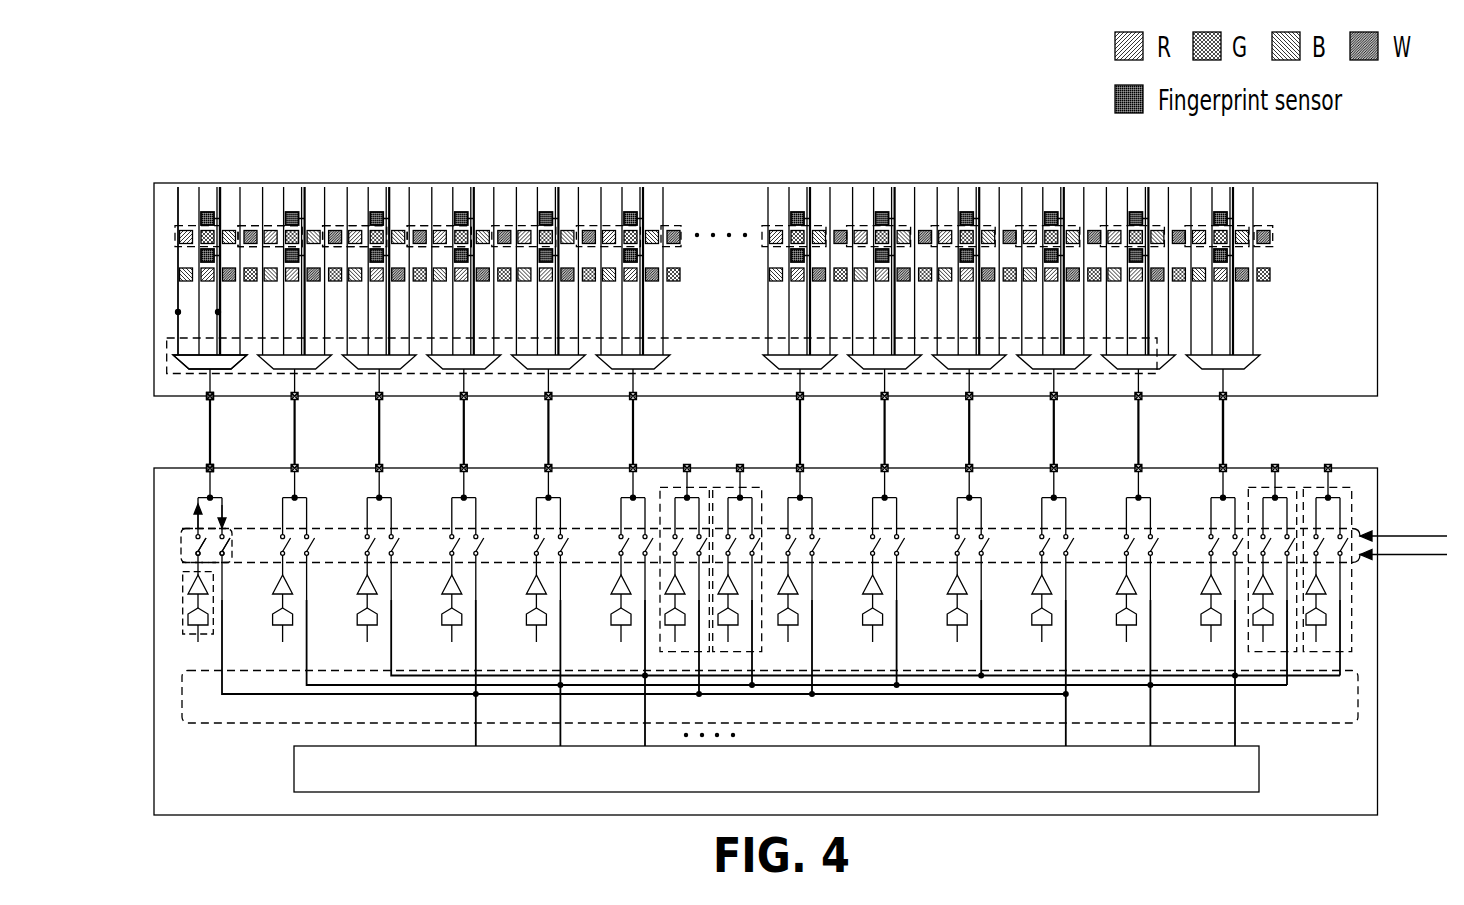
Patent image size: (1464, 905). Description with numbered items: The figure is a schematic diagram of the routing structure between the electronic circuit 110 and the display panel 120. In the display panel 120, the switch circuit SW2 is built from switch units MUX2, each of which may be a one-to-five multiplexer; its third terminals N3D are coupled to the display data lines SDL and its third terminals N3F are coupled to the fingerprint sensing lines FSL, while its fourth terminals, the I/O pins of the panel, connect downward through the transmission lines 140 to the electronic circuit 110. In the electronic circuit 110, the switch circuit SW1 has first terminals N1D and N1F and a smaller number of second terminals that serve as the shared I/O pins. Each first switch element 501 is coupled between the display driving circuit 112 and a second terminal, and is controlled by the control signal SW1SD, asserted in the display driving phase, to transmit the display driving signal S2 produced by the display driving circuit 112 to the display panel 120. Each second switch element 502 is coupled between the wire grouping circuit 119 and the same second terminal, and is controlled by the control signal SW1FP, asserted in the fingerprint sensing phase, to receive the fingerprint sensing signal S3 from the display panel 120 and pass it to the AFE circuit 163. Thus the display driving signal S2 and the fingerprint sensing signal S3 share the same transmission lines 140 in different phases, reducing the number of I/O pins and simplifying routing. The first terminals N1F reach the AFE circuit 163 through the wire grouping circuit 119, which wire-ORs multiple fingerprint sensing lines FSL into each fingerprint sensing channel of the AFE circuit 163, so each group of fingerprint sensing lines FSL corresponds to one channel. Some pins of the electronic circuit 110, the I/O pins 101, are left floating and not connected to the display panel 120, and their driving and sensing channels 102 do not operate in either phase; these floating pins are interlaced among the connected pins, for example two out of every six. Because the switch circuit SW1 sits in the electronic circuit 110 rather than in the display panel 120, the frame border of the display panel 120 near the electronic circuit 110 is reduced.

The display panel 120 is at (722, 182).
The display data line SDL is at (179, 197).
The fingerprint sensing line FSL is at (218, 198).
The third terminal N3D is at (177, 311).
The third terminal N3F is at (217, 313).
The switch unit MUX2 is at (174, 358).
The switch circuit SW2 is at (170, 336).
The electronic circuit 110 is at (1360, 468).
The I/O pin 101 is at (686, 464).
The driving and sensing channel 102 is at (670, 487).
The transmission line 140 is at (1223, 430).
The control signal SW1SD is at (814, 520).
The control signal SW1FP is at (814, 571).
The switch circuit SW1 is at (180, 552).
The first switch element 501 is at (197, 545).
The second switch element 502 is at (226, 549).
The first terminal N1D is at (197, 555).
The first terminal N1F is at (221, 555).
The display driving circuit 112 is at (183, 624).
The display driving signal S2 is at (183, 511).
The fingerprint sensing signal S3 is at (235, 511).
The wire grouping circuit 119 is at (182, 705).
The AFE circuit 163 is at (1260, 760).